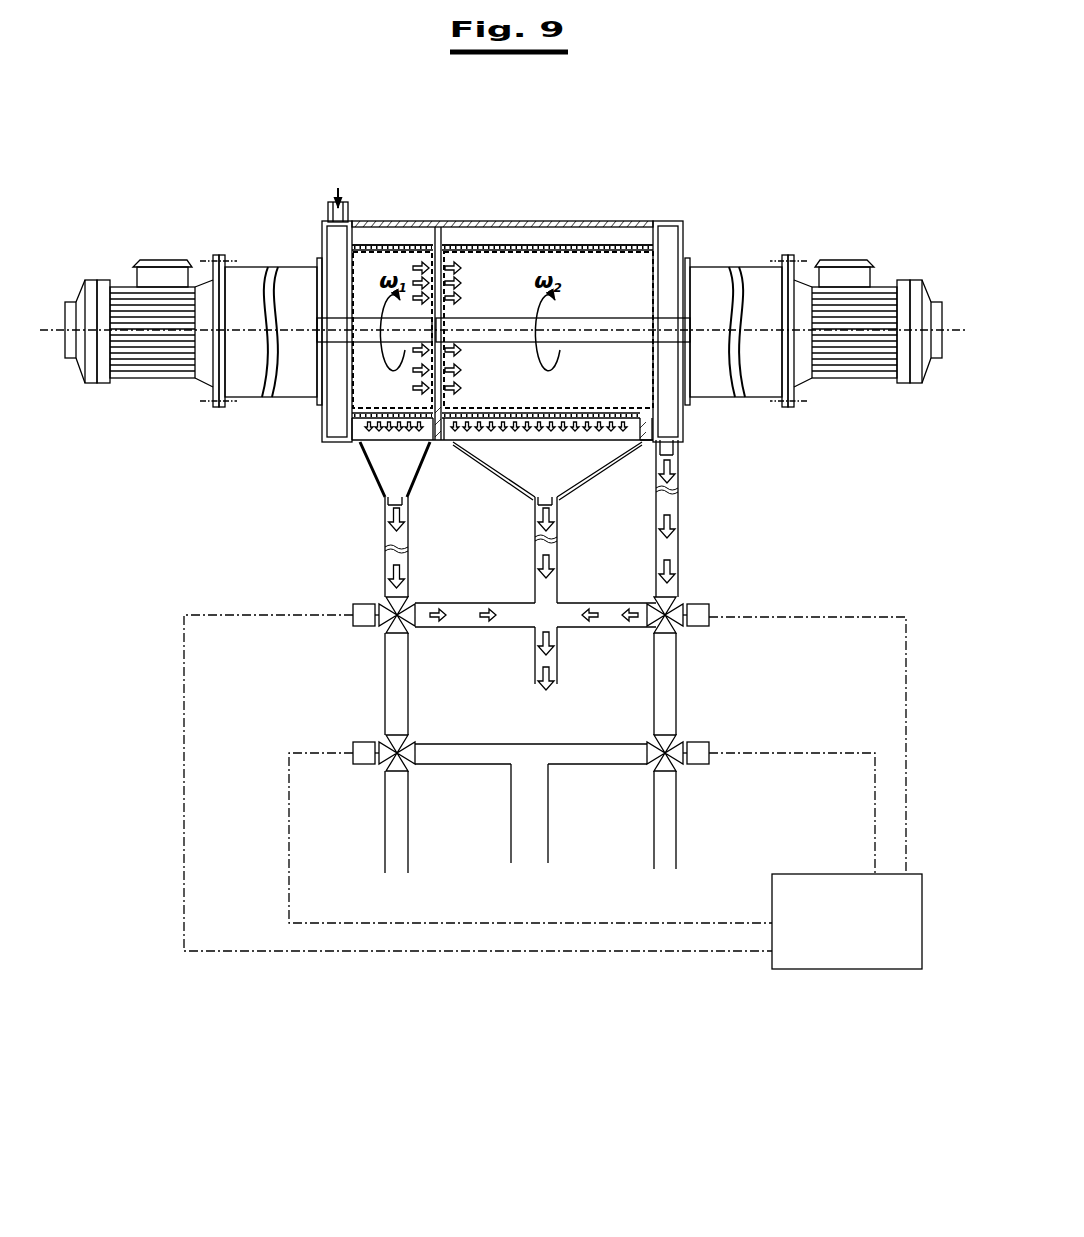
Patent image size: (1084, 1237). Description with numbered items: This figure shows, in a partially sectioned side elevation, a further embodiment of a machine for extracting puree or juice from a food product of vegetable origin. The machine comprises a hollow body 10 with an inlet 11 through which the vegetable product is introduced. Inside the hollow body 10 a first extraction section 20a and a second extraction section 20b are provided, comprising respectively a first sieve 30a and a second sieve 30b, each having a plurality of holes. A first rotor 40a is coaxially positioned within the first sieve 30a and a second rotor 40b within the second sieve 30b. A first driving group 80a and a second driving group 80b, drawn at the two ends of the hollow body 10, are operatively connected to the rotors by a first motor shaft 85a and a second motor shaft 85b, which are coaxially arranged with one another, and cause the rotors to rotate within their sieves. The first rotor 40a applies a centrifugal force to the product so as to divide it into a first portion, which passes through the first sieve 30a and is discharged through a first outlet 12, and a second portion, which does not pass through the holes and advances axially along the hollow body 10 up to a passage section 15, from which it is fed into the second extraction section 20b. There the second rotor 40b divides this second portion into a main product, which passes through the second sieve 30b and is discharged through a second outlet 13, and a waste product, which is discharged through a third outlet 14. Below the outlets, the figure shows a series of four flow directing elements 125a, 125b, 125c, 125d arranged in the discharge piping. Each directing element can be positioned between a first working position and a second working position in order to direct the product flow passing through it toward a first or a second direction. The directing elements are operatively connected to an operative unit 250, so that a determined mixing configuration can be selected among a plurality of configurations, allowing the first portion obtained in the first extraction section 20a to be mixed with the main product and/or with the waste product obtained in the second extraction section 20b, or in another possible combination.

The hollow body 10 is at (795, 205).
The inlet 11 is at (323, 200).
The first outlet 12 is at (382, 445).
The second outlet 13 is at (583, 448).
The third outlet 14 is at (668, 446).
The passage section 15 is at (447, 257).
The first extraction section 20a is at (380, 233).
The second extraction section 20b is at (622, 235).
The first sieve 30a is at (410, 237).
The second sieve 30b is at (560, 235).
The first rotor 40a is at (358, 387).
The second rotor 40b is at (648, 398).
The first driving group 80a is at (123, 255).
The second driving group 80b is at (867, 390).
The first motor shaft 85a is at (350, 322).
The second motor shaft 85b is at (632, 310).
The flow directing element 125a is at (373, 595).
The flow directing element 125b is at (697, 592).
The flow directing element 125c is at (683, 775).
The flow directing element 125d is at (375, 742).
The operative unit 250 is at (823, 984).